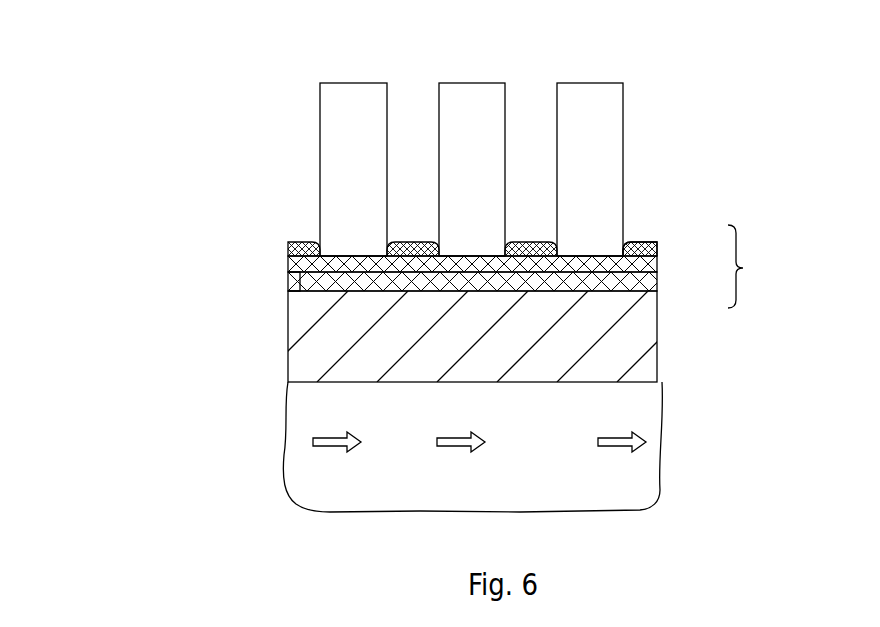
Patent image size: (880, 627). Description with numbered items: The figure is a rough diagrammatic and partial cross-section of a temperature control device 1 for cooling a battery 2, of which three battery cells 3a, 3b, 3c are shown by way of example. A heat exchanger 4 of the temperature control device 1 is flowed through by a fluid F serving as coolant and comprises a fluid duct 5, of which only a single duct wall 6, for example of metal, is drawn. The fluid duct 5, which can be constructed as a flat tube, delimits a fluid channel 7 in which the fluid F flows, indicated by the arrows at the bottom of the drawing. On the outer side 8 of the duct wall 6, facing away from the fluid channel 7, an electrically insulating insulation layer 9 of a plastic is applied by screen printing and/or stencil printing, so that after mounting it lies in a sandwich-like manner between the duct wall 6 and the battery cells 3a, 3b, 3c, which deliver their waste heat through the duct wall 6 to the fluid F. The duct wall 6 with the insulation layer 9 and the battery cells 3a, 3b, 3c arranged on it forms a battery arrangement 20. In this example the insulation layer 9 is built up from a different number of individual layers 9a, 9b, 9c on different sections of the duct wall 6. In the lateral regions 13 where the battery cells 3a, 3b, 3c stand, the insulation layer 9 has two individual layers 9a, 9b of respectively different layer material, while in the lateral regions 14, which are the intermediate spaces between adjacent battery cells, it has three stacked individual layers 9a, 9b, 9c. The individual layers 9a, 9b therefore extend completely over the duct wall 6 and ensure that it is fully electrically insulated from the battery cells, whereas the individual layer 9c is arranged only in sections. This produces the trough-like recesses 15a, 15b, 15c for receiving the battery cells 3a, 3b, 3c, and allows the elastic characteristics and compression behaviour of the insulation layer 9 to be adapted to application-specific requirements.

The temperature control device 1 is at (682, 502).
The battery 2 is at (306, 125).
The battery cell 3a is at (364, 136).
The battery cell 3b is at (482, 136).
The battery cell 3c is at (599, 136).
The heat exchanger 4 is at (266, 345).
The fluid duct 5 is at (305, 287).
The duct wall 6 is at (657, 339).
The fluid channel 7 is at (553, 469).
The outer side 8 is at (644, 243).
The insulation layer 9 is at (743, 268).
The individual layer 9a is at (657, 285).
The individual layer 9b is at (657, 262).
The individual layer 9c is at (657, 245).
The lateral region 13 is at (349, 270).
The lateral region 14 is at (408, 280).
The trough-like recess 15a is at (350, 256).
The trough-like recess 15b is at (469, 256).
The trough-like recess 15c is at (588, 256).
The battery arrangement 20 is at (660, 126).
The fluid F is at (455, 448).